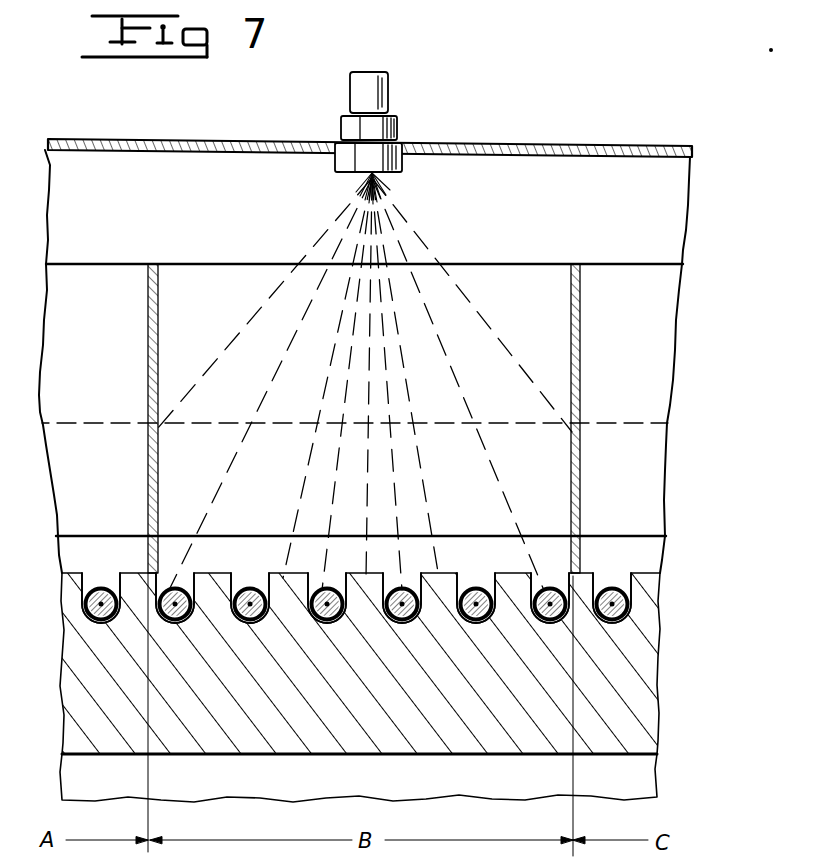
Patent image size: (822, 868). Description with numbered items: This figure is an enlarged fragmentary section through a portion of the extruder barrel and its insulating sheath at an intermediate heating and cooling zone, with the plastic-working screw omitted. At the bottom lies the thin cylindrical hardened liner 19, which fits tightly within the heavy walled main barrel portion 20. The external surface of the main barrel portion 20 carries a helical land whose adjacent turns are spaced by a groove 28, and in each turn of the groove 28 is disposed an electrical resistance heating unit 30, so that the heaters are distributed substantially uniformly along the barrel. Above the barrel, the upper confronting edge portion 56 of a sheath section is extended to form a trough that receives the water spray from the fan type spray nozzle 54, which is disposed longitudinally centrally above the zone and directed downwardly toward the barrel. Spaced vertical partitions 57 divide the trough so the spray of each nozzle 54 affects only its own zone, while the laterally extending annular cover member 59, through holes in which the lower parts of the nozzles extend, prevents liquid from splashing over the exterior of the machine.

The thin cylindrical hardened liner 19 is at (648, 786).
The main barrel portion 20 is at (387, 624).
The groove 28 is at (312, 578).
The electrical resistance heating unit 30 is at (402, 588).
The fan type spray nozzle 54 is at (399, 133).
The upper confronting edge portion 56 is at (528, 282).
The vertical partition 57 is at (159, 368).
The annular cover member 59 is at (538, 148).